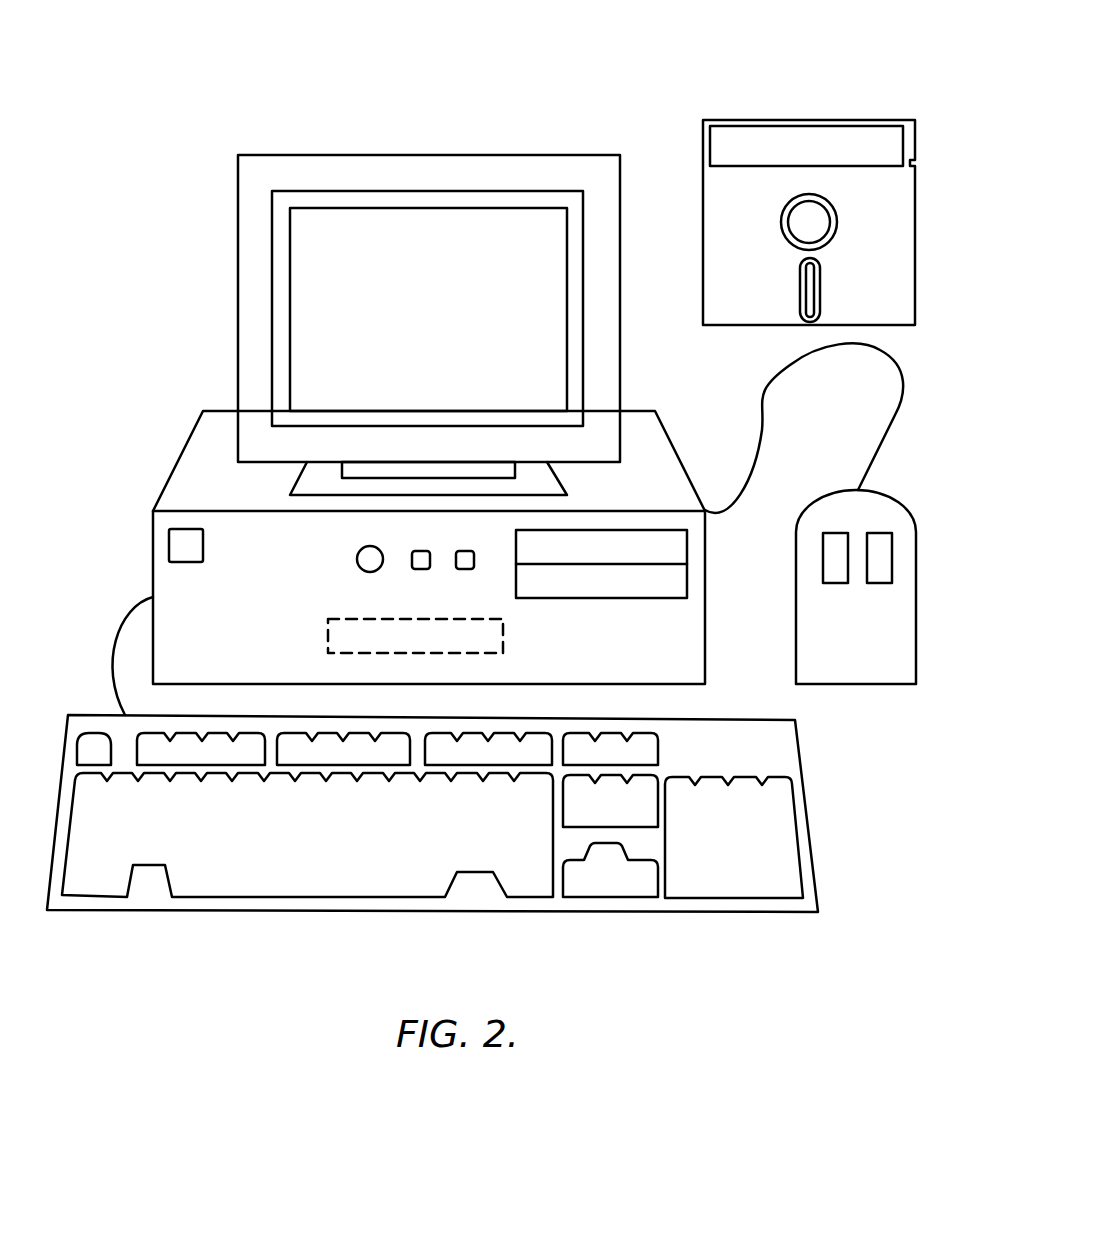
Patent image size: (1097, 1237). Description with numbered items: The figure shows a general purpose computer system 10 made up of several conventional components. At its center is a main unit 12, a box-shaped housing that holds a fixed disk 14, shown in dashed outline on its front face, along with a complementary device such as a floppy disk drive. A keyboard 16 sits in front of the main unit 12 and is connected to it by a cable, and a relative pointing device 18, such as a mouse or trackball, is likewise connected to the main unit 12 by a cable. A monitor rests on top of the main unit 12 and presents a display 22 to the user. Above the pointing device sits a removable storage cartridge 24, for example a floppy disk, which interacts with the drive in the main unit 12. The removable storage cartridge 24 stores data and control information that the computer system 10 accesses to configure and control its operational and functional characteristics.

The general purpose computer system 10 is at (703, 53).
The main unit 12 is at (707, 577).
The fixed disk 14 is at (505, 643).
The keyboard 16 is at (808, 885).
The relative pointing device 18 is at (796, 620).
The display 22 is at (460, 326).
The removable storage cartridge 24 is at (850, 120).